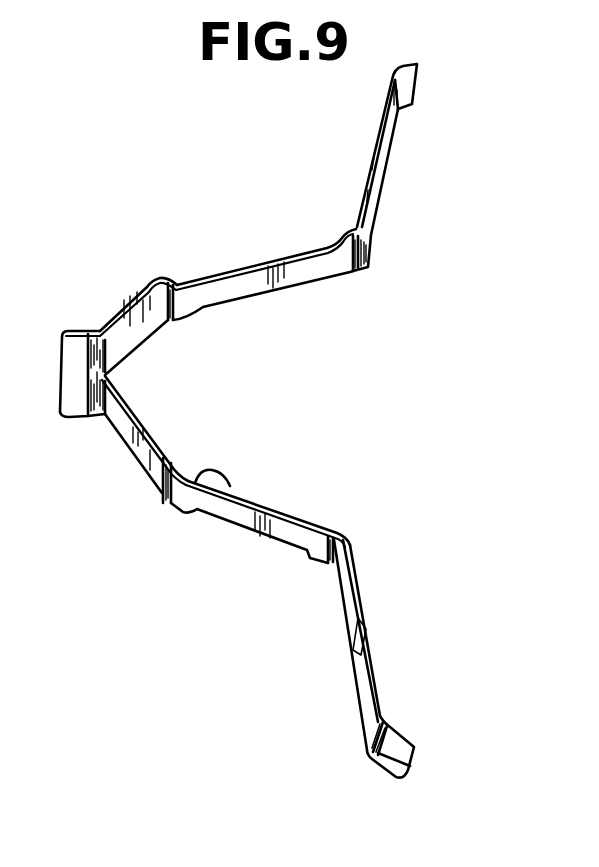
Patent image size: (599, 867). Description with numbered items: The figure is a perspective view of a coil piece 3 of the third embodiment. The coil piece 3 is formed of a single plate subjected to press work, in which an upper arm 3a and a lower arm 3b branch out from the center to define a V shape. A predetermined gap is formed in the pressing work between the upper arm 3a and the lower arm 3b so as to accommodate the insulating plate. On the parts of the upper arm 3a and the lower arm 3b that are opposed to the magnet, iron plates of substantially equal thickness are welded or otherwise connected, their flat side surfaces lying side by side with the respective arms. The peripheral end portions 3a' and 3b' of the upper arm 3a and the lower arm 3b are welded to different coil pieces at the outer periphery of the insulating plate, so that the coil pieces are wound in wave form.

The coil piece 3 is at (68, 394).
The upper arm 3a is at (293, 219).
The lower arm 3b is at (281, 596).
The peripheral end portion of the upper arm 3a' is at (419, 167).
The peripheral end portion of the lower arm 3b' is at (403, 678).